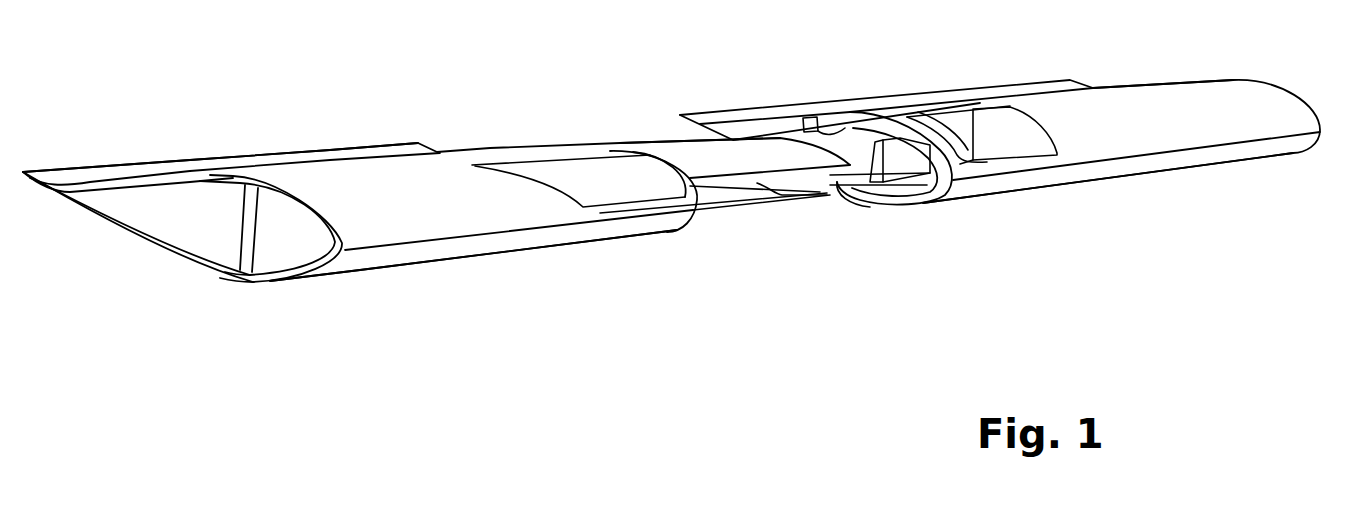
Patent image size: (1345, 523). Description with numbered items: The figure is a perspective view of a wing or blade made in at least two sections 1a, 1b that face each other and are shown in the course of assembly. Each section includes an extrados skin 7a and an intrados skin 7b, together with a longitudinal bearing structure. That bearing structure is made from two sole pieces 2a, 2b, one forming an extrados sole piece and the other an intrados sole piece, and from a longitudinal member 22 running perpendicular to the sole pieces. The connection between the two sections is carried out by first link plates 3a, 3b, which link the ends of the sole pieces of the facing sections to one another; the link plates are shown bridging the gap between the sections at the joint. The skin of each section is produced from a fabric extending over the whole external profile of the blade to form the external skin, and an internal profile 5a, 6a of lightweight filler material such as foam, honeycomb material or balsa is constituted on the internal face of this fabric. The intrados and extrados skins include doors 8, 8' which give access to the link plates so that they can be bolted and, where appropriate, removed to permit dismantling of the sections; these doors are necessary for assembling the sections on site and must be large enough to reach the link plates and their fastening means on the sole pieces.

The section 1a is at (443, 255).
The section 1b is at (1153, 178).
The sole piece 2a is at (827, 140).
The sole piece 2b is at (837, 193).
The first link plate 3a is at (690, 167).
The first link plate 3b is at (720, 200).
The internal profile 5a is at (760, 128).
The internal profile 6a is at (968, 165).
The extrados skin 7a is at (468, 195).
The intrados skin 7b is at (527, 235).
The door 8 is at (578, 147).
The door 8' is at (1008, 103).
The longitudinal member 22 is at (902, 167).